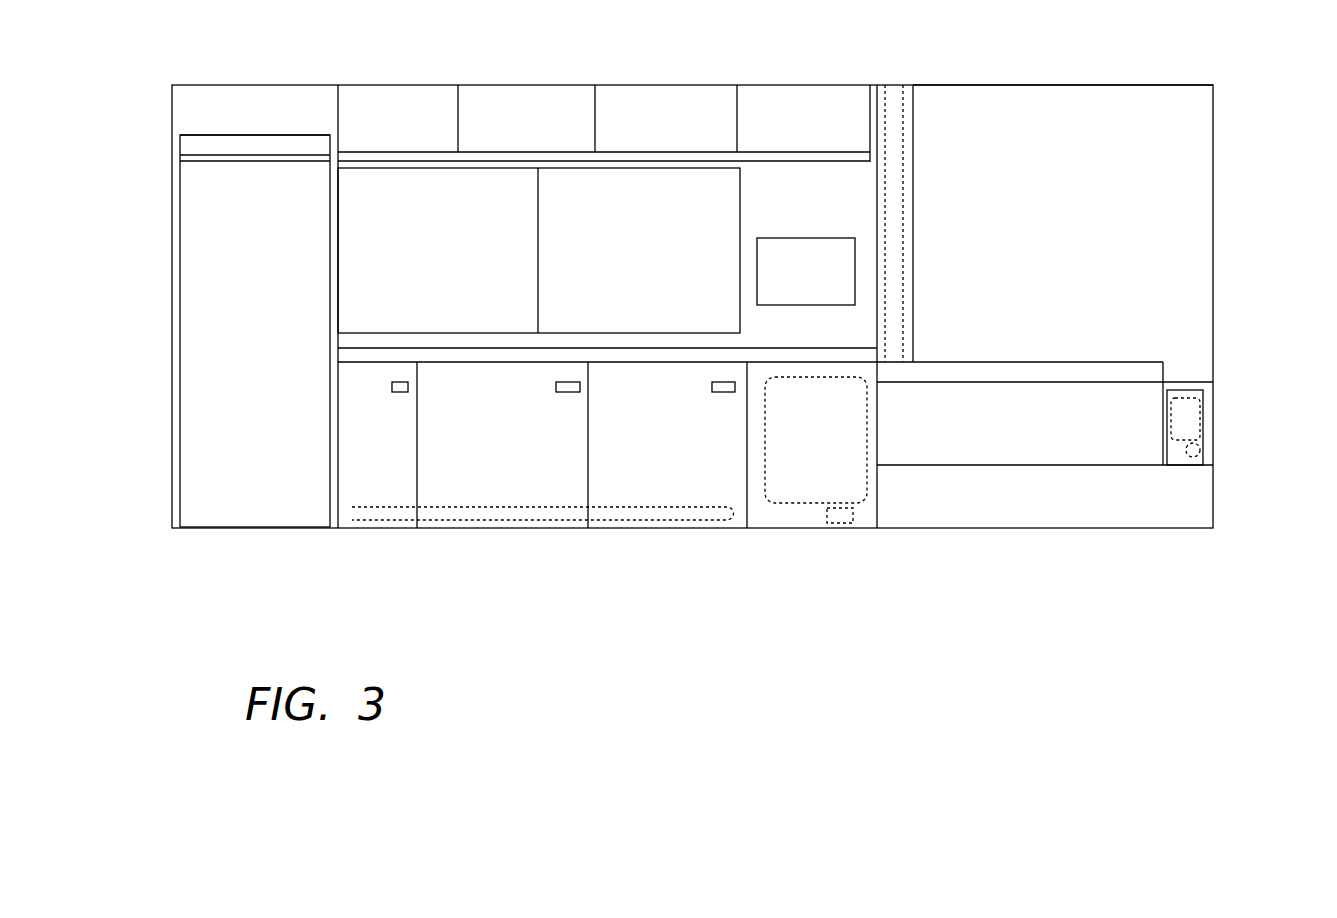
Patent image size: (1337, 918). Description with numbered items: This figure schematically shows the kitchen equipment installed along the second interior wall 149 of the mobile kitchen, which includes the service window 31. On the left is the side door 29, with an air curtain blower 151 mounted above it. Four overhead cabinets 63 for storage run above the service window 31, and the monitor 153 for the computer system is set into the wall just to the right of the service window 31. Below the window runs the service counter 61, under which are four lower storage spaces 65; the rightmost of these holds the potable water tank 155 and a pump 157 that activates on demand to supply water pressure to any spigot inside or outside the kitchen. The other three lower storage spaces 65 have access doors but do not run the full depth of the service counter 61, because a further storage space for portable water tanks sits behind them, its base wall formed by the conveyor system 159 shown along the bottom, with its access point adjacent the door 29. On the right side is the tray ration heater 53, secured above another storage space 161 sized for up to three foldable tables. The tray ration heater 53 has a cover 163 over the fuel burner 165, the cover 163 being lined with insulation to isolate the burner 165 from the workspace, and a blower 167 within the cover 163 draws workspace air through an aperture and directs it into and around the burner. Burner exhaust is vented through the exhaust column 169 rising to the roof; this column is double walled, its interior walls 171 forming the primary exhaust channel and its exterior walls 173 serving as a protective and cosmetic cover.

The side door 29 is at (193, 236).
The air curtain blower 151 is at (257, 133).
The overhead cabinets 63 is at (674, 108).
The service window 31 is at (745, 197).
The monitor 153 is at (794, 237).
The exhaust column 169 is at (913, 251).
The interior walls 171 is at (913, 122).
The exterior walls 173 is at (913, 155).
The service counter 61 is at (775, 348).
The lower storage spaces 65 is at (503, 487).
The conveyor system 159 is at (352, 521).
The potable water tank 155 is at (777, 505).
The pump 157 is at (838, 525).
The tray ration heater 53 is at (1165, 368).
The storage space 161 is at (1165, 381).
The cover 163 is at (1190, 391).
The fuel burner 165 is at (1212, 413).
The blower 167 is at (1203, 452).
The second interior wall 149 is at (1120, 88).